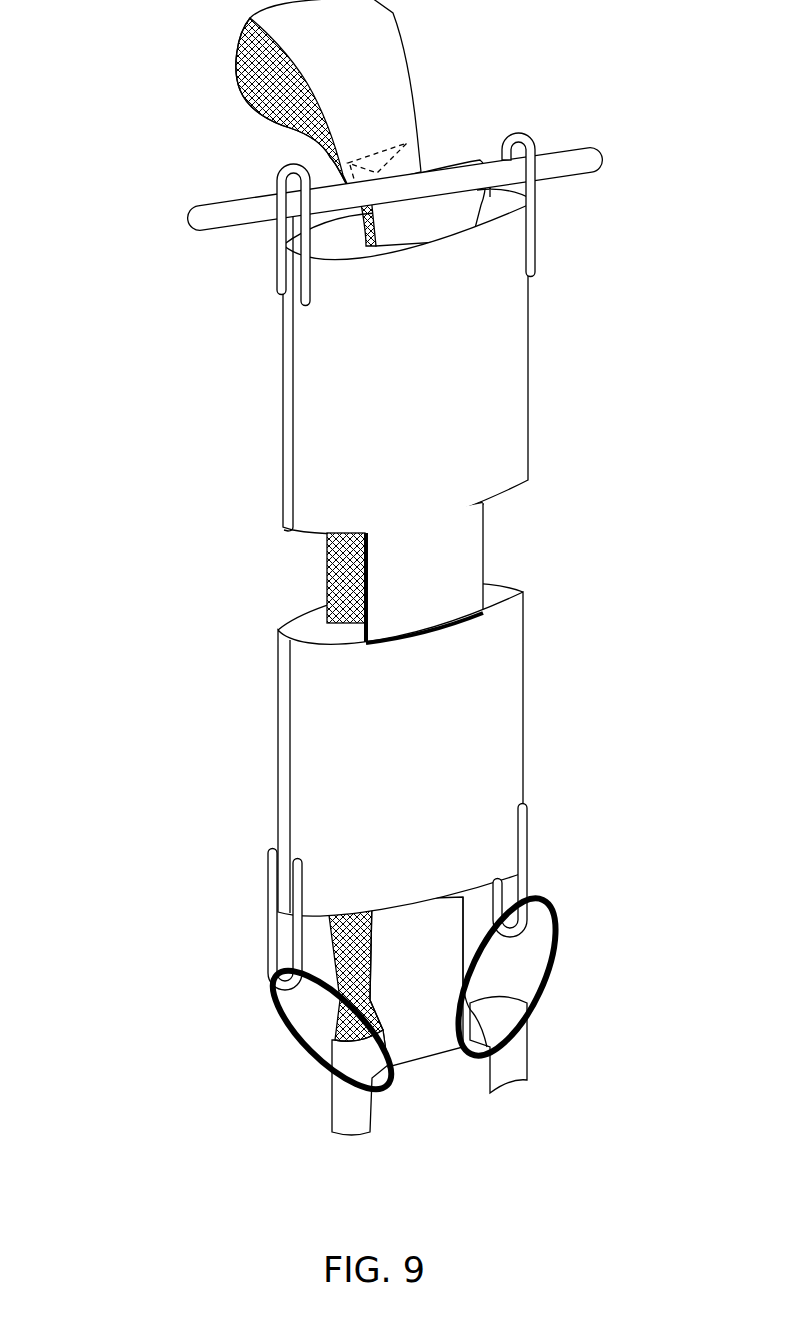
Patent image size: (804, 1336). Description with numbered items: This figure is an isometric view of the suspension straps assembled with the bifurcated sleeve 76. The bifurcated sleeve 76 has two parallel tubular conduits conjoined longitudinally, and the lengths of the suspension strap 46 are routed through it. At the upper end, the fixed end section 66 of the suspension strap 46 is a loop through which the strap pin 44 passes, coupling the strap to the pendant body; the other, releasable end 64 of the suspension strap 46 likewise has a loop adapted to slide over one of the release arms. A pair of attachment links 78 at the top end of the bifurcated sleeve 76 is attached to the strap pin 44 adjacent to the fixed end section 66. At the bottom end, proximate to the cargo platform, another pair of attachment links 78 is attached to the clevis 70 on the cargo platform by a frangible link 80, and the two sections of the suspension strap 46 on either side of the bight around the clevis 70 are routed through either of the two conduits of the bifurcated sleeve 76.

The strap pin 44 is at (577, 157).
The suspension strap 46 is at (445, 567).
The releasable end 64 is at (330, 57).
The fixed end section 66 is at (418, 212).
The clevis 70 is at (512, 1067).
The bifurcated sleeve 76 is at (434, 382).
The attachment links 78 is at (530, 197).
The frangible link 80 is at (548, 968).